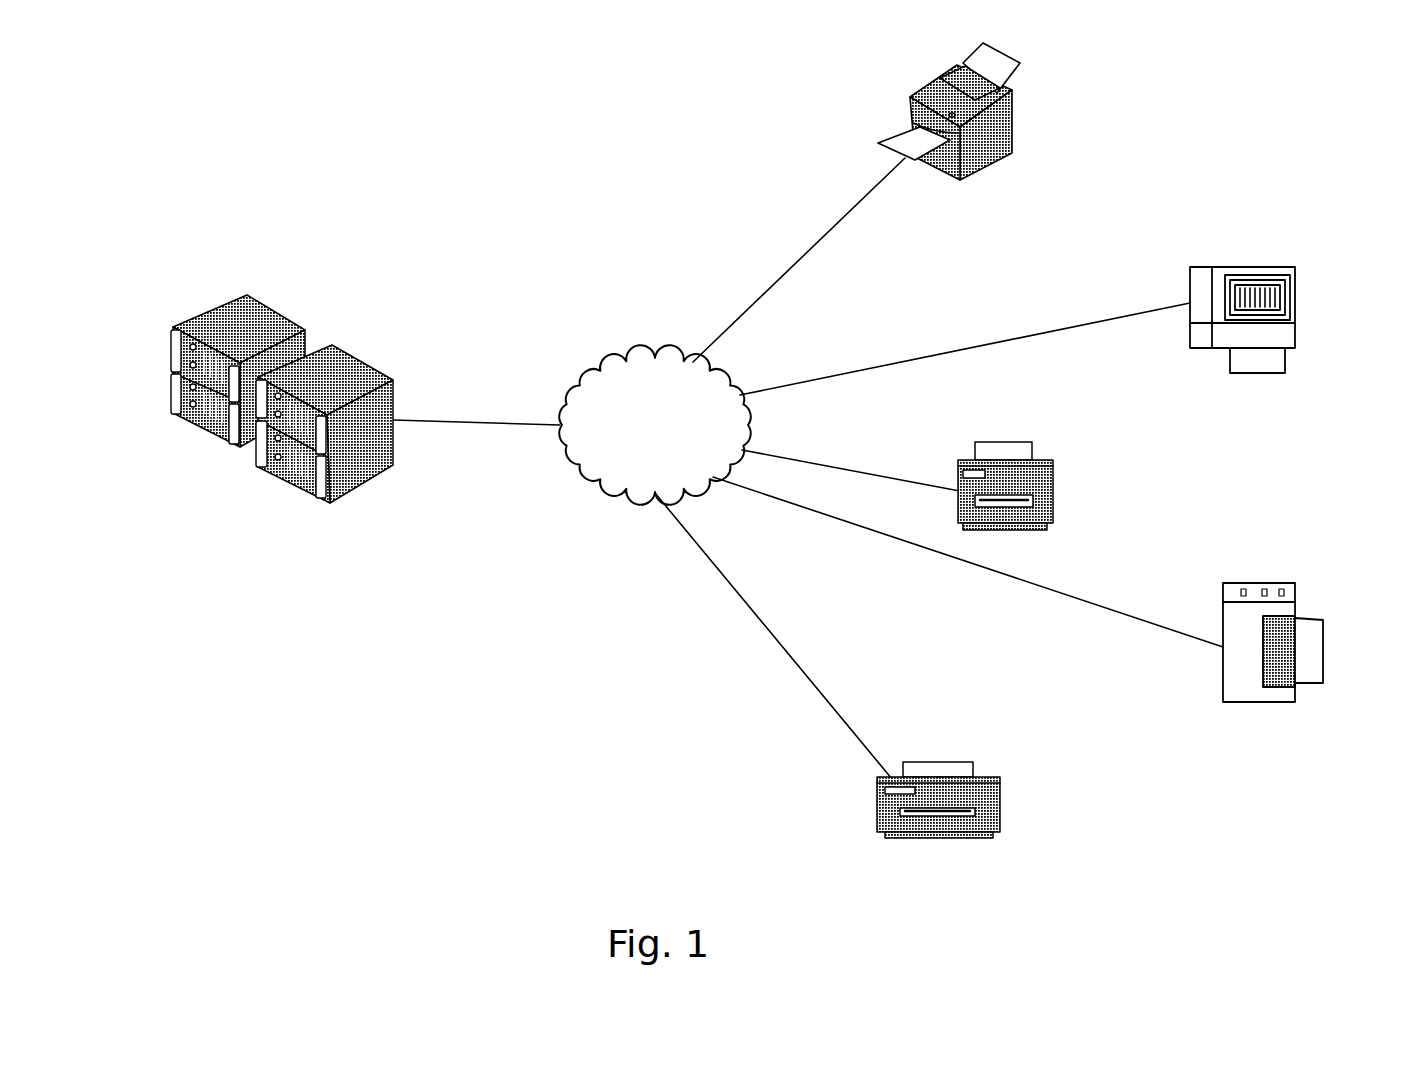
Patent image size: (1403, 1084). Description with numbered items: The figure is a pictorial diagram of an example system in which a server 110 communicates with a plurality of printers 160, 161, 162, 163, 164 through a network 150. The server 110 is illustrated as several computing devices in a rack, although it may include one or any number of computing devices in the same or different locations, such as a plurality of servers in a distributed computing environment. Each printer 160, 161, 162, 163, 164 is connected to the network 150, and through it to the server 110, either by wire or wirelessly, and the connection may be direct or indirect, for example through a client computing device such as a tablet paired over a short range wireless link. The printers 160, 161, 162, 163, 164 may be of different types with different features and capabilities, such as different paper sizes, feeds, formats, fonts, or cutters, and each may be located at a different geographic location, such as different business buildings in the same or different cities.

The server 110 is at (214, 318).
The network 150 is at (655, 425).
The printer 160 is at (1015, 128).
The printer 161 is at (1260, 287).
The printer 162 is at (1053, 510).
The printer 163 is at (1297, 610).
The printer 164 is at (1000, 802).